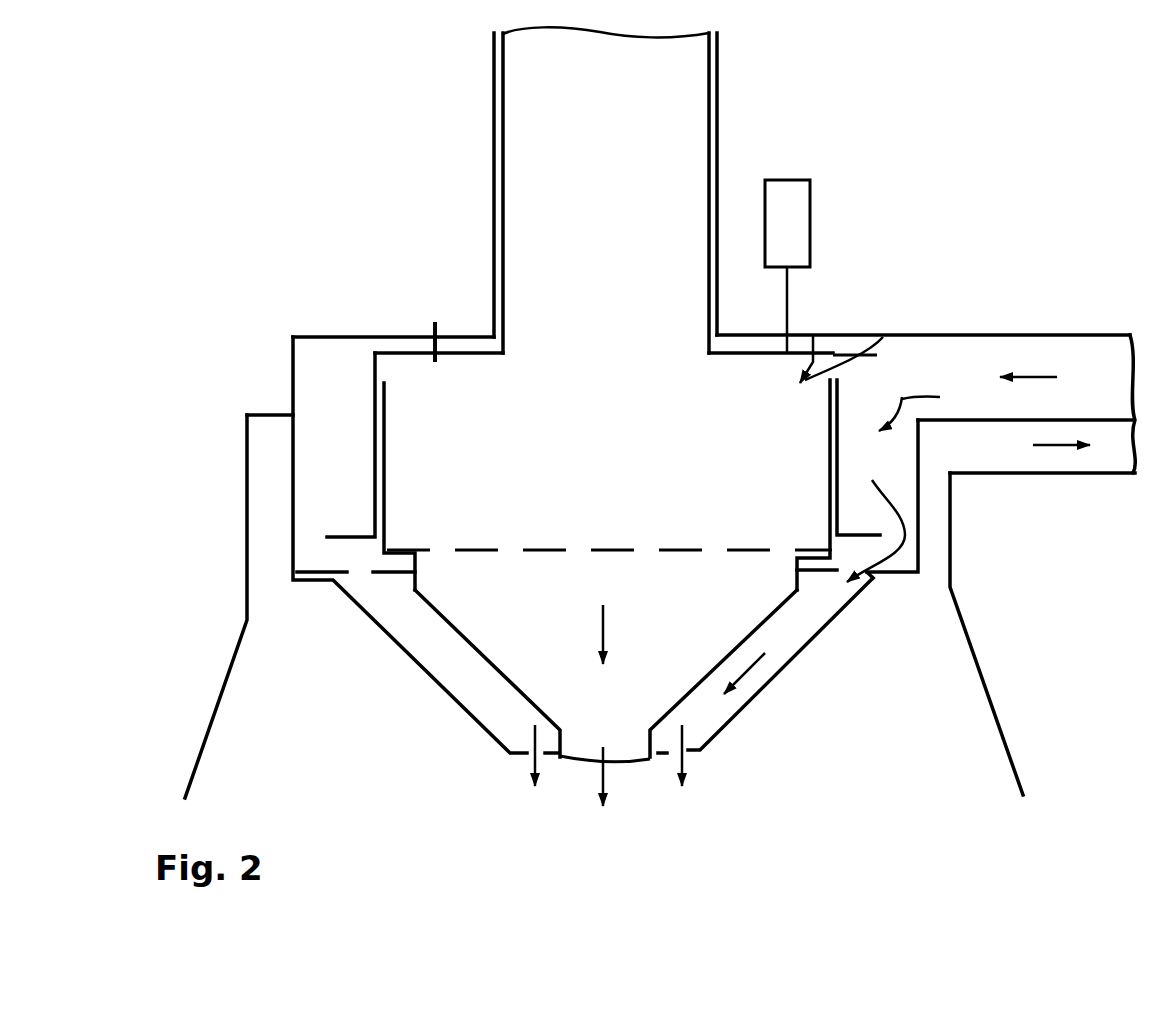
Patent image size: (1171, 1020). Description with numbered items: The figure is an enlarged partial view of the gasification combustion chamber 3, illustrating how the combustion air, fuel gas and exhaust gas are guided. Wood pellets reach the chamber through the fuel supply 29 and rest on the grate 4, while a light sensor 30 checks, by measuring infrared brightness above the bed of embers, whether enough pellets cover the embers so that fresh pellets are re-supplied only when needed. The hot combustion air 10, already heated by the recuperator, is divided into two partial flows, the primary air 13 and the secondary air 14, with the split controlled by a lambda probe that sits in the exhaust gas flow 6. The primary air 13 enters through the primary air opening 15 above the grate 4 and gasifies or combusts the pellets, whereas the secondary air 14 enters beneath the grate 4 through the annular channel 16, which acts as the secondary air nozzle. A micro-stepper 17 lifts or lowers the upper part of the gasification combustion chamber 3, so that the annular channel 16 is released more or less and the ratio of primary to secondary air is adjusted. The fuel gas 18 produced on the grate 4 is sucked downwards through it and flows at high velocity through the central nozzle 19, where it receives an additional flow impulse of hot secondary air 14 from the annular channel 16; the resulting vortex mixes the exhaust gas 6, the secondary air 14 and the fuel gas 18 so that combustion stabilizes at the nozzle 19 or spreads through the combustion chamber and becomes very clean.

The gasification combustion chamber 3 is at (532, 463).
The grate 4 is at (467, 549).
The exhaust gas flow 6 is at (1067, 445).
The hot combustion air 10 is at (1038, 377).
The primary air 13 is at (813, 340).
The secondary air 14 is at (902, 397).
The primary air opening 15 is at (883, 337).
The annular channel 16 is at (684, 755).
The micro-stepper 17 is at (787, 183).
The fuel gas 18 is at (607, 633).
The central nozzle 19 is at (590, 752).
The fuel supply 29 is at (521, 124).
The light sensor 30 is at (433, 323).